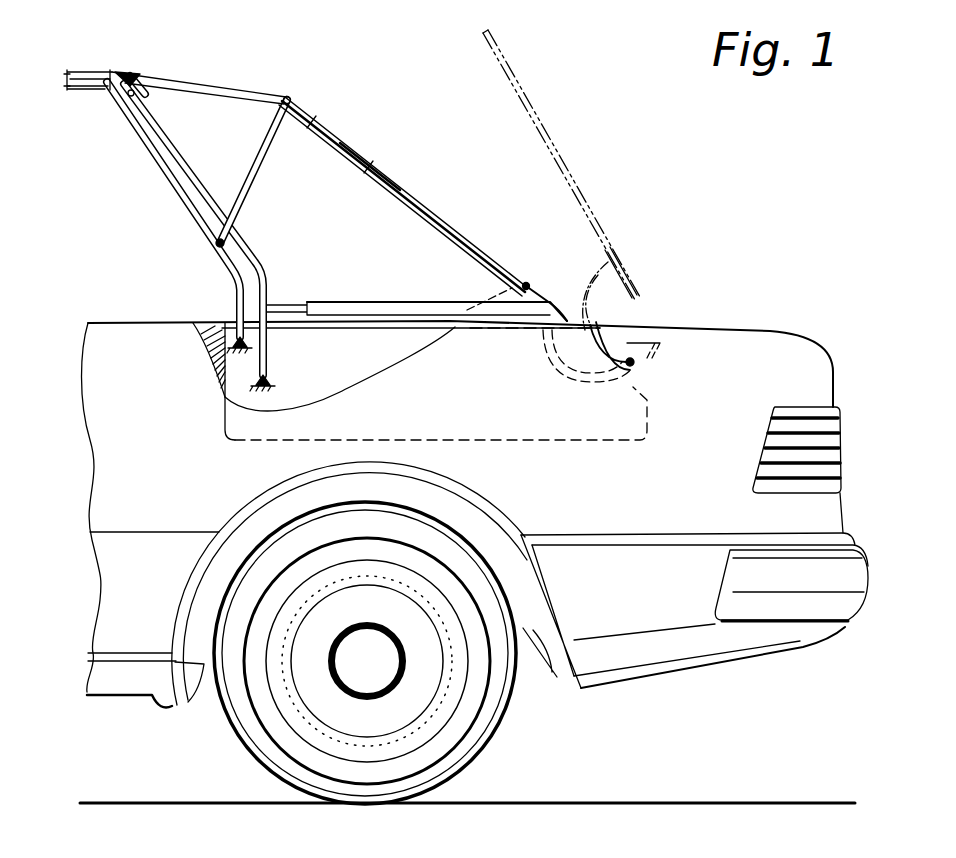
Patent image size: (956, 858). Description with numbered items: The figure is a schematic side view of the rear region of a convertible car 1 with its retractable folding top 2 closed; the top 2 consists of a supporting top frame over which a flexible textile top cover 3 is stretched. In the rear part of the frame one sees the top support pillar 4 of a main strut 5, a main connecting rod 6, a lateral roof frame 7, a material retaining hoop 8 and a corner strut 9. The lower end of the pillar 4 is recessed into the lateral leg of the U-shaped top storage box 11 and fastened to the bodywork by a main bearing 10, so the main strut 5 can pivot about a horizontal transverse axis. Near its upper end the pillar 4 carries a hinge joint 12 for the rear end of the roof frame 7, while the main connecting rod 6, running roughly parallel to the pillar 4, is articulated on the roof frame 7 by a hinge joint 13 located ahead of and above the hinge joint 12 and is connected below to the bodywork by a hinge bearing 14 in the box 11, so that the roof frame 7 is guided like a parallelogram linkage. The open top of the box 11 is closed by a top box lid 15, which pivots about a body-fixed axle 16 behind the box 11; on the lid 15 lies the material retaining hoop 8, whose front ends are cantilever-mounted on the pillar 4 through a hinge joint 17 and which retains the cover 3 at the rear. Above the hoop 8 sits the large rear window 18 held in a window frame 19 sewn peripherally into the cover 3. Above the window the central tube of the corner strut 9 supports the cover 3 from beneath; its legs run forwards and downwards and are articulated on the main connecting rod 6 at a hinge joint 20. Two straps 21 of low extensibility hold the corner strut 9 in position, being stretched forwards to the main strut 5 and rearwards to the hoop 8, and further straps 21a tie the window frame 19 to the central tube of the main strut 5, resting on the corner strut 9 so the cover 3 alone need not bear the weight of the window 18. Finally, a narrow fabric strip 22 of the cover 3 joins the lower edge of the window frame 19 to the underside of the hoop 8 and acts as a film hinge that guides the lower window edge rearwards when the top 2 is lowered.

The convertible car 1 is at (656, 240).
The folding top 2 is at (175, 66).
The top cover 3 is at (112, 72).
The top support pillar 4 is at (182, 158).
The main strut 5 is at (128, 75).
The main connecting rod 6 is at (148, 141).
The lateral roof frame 7 is at (77, 92).
The material retaining hoop 8 is at (390, 310).
The corner strut 9 is at (261, 158).
The main bearing 10 is at (227, 397).
The top storage box 11 is at (595, 428).
The hinge joint 12 is at (132, 95).
The hinge joint 13 is at (108, 74).
The hinge bearing 14 is at (230, 342).
The top box lid 15 is at (587, 198).
The axle 16 is at (630, 318).
The hinge joint 17 is at (272, 308).
The rear window 18 is at (420, 203).
The window frame 19 is at (317, 122).
The hinge joint 20 is at (219, 243).
The straps 21 is at (372, 170).
The straps 21a is at (228, 88).
The fabric strip 22 is at (541, 290).